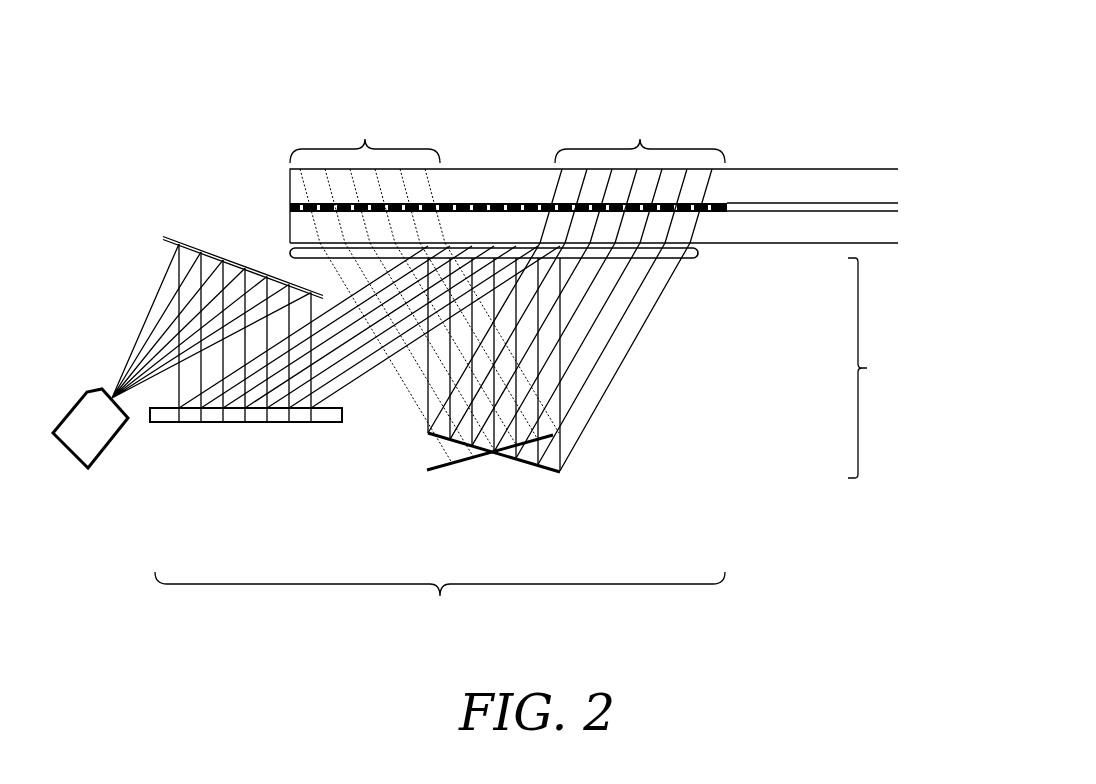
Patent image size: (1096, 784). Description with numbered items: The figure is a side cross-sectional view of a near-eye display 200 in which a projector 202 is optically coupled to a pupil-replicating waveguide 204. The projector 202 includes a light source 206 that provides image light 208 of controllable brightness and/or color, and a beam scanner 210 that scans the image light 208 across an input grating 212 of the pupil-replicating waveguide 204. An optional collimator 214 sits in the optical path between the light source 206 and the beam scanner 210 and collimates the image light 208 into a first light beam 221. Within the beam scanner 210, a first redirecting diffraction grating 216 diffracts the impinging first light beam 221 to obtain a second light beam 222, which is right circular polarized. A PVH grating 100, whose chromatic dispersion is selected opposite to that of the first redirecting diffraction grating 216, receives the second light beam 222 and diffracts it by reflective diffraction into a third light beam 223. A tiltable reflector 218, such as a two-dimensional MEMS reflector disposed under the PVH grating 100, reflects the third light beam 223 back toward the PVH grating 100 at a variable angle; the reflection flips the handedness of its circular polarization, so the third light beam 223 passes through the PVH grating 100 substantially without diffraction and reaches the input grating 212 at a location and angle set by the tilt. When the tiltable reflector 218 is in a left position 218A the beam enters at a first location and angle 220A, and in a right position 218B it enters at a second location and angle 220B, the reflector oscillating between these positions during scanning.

The near-eye display 200 is at (524, 66).
The projector 202 is at (886, 368).
The pupil-replicating waveguide 204 is at (853, 168).
The light source 206 is at (78, 466).
The image light 208 is at (148, 294).
The beam scanner 210 is at (440, 603).
The input grating 212 is at (481, 203).
The collimator 214 is at (216, 244).
The first redirecting diffraction grating 216 is at (216, 424).
The tiltable reflector 218 is at (440, 497).
The left position 218A is at (468, 468).
The right position 218B is at (548, 468).
The first location and angle 220A is at (424, 281).
The second location and angle 220B is at (632, 171).
The first light beam 221 is at (200, 378).
The second light beam 222 is at (352, 382).
The third light beam 223 is at (557, 366).
The PVH grating 100 is at (668, 262).